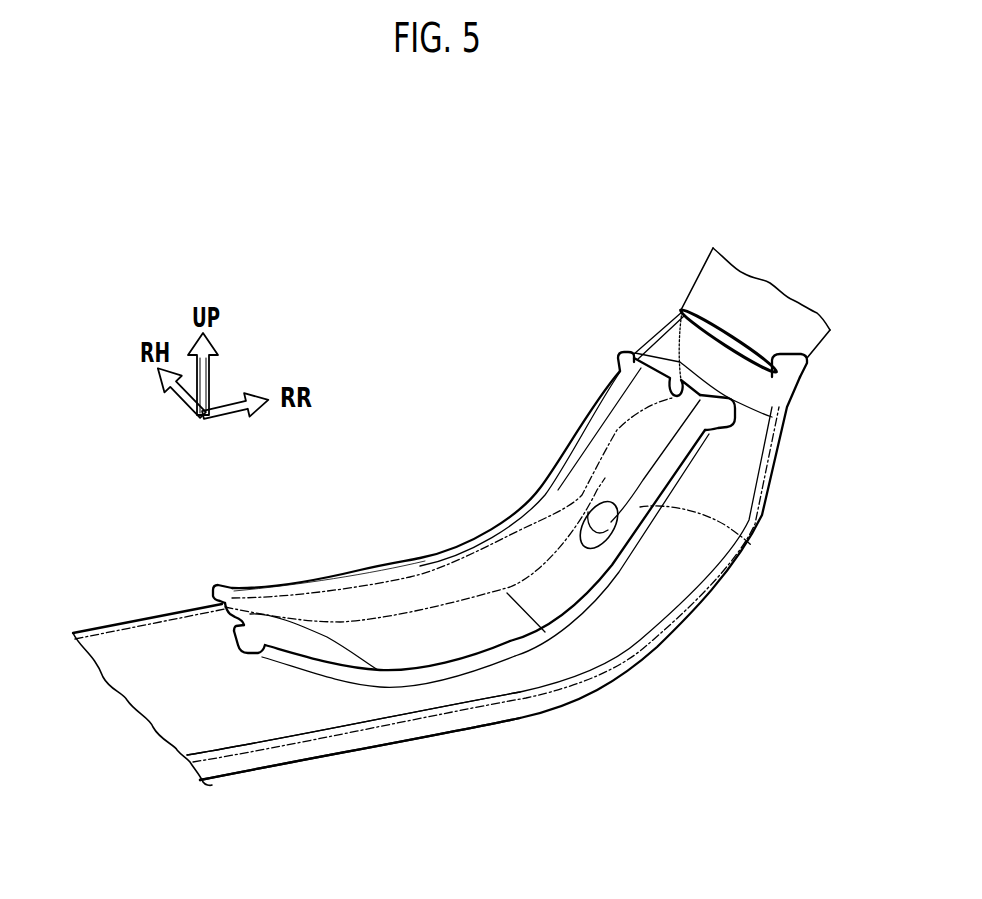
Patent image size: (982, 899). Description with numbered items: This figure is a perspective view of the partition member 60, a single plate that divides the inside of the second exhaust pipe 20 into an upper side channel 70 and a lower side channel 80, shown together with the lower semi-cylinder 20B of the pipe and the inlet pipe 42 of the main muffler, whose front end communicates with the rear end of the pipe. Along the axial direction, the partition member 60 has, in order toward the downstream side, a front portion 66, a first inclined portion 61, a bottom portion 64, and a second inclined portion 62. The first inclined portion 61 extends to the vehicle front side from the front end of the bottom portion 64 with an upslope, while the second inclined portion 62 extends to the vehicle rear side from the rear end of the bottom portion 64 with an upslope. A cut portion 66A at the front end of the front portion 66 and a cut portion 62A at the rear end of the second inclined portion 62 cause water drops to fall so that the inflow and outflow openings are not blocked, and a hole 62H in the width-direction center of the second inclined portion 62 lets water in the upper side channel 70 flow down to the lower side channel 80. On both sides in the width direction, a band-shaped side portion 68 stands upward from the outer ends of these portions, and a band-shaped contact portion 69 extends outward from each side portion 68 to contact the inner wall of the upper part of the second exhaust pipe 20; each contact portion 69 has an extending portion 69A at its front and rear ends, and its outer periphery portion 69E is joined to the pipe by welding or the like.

The second exhaust pipe 20 is at (110, 632).
The semi-cylinder 20B is at (287, 770).
The inlet pipe 42 is at (710, 290).
The partition member 60 is at (458, 545).
The first inclined portion 61 is at (320, 652).
The second inclined portion 62 is at (547, 552).
The cut portion 62A is at (650, 355).
The hole 62H is at (593, 503).
The bottom portion 64 is at (443, 622).
The front portion 66 is at (250, 622).
The cut portion 66A is at (230, 615).
The side portion 68 is at (300, 604).
The contact portion 69 is at (336, 586).
The extending portion 69A is at (617, 355).
The outer periphery portion 69E is at (386, 565).
The upper side channel 70 is at (489, 606).
The lower side channel 80 is at (567, 660).